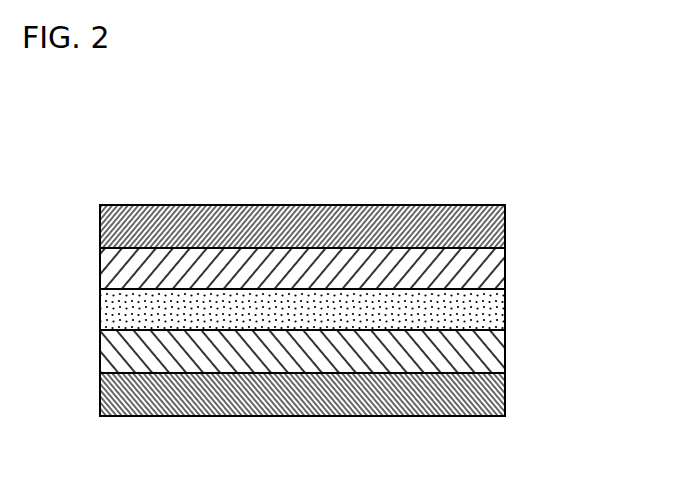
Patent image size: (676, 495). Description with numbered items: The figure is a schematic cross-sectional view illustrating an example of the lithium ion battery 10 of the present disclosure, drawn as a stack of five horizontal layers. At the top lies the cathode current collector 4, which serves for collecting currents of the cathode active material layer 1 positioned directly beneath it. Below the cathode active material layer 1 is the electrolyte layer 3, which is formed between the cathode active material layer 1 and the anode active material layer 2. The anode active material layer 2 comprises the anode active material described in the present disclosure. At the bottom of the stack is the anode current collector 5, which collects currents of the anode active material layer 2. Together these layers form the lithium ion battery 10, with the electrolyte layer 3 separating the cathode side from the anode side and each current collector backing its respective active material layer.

The lithium ion battery 10 is at (348, 275).
The cathode current collector 4 is at (480, 233).
The cathode active material layer 1 is at (480, 273).
The electrolyte layer 3 is at (475, 315).
The anode active material layer 2 is at (475, 358).
The anode current collector 5 is at (480, 397).